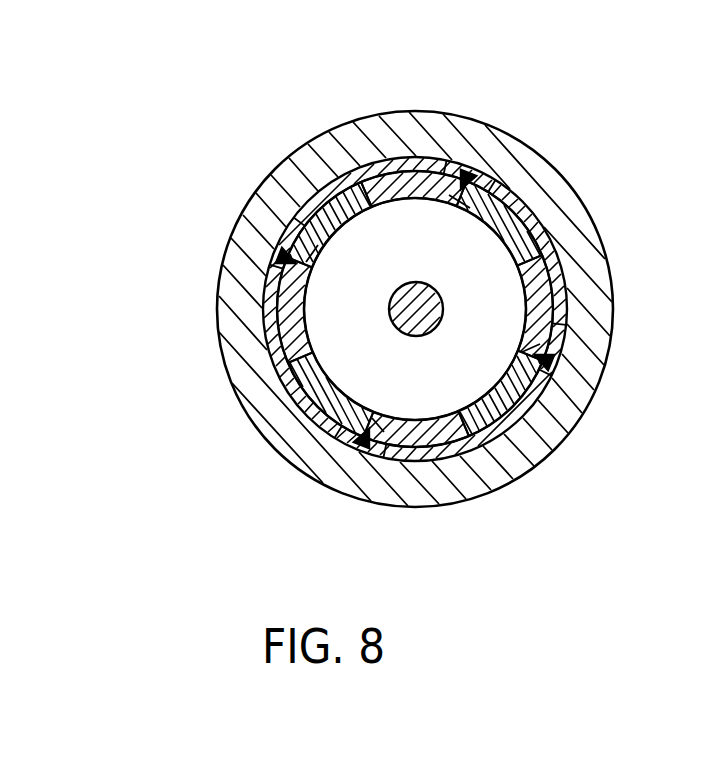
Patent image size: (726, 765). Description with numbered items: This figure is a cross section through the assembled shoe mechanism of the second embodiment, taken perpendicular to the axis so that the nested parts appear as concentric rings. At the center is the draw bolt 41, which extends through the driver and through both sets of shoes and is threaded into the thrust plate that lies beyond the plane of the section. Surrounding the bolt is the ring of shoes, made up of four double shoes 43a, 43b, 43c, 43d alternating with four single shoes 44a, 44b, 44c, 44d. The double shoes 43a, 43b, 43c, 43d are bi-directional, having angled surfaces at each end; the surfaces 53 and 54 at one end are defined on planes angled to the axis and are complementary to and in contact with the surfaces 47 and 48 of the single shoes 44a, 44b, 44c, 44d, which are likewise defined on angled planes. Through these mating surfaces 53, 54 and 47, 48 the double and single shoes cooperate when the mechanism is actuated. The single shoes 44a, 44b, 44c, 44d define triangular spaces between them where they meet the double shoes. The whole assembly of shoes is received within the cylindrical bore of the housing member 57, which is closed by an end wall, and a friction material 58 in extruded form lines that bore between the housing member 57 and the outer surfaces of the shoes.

The draw bolt 41 is at (529, 314).
The double shoe 43a is at (452, 165).
The double shoe 43b is at (555, 311).
The double shoe 43c is at (470, 452).
The double shoe 43d is at (278, 318).
The single shoe 44a is at (305, 213).
The single shoe 44b is at (548, 205).
The single shoe 44c is at (571, 397).
The single shoe 44d is at (342, 462).
The surface 47 is at (548, 160).
The surface 48 is at (298, 163).
The surface 53 is at (414, 160).
The surface 54 is at (470, 150).
The housing member 57 is at (305, 158).
The friction material 58 is at (357, 165).